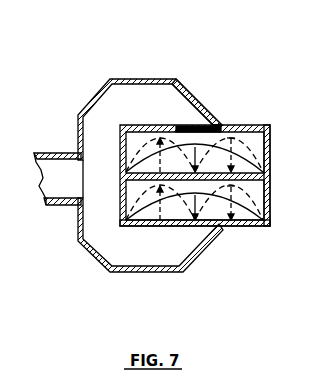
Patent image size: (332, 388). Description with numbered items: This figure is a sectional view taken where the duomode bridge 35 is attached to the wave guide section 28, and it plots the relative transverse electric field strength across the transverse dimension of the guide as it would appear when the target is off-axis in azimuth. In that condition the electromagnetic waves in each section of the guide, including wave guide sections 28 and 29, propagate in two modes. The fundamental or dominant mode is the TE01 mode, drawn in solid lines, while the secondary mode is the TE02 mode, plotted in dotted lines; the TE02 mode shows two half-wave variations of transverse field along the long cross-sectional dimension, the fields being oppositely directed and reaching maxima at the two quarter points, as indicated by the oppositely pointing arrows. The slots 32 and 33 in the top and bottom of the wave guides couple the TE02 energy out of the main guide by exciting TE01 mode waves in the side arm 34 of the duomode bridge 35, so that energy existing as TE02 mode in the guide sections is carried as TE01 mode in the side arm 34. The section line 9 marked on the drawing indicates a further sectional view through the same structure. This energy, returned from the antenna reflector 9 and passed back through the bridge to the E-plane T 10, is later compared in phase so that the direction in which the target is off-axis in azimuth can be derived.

The E-plane T 10 is at (90, 150).
The wave guide section 28 is at (238, 130).
The wave guide section 29 is at (269, 207).
The slot 32 is at (175, 125).
The slot 33 is at (212, 224).
The side arm 34 is at (46, 153).
The duomode bridge 35 is at (194, 94).
The antenna reflector 9 is at (174, 72).
The TE01 mode TE01 is at (201, 148).
The TE02 mode TE02 is at (135, 152).